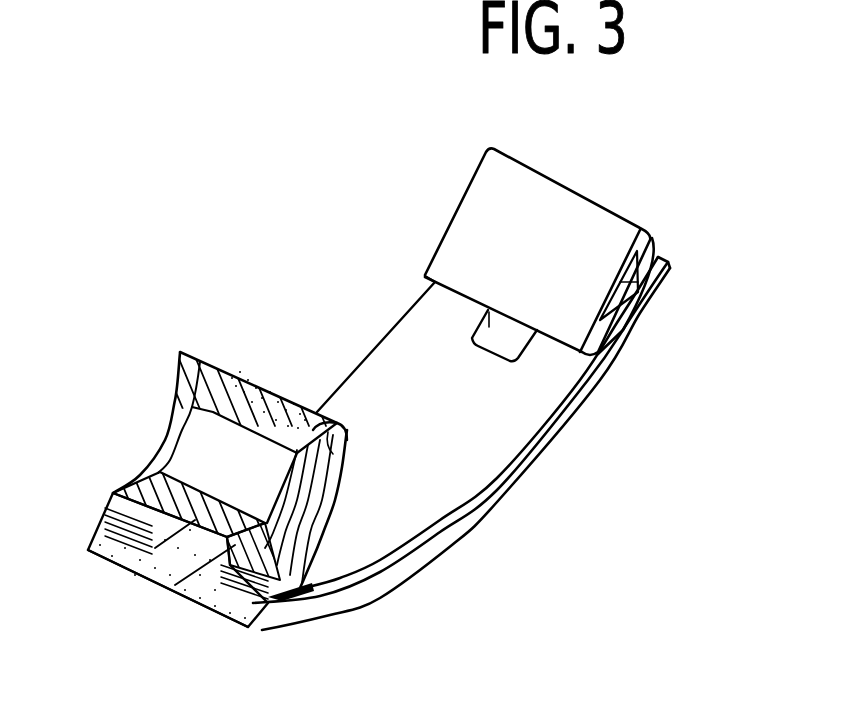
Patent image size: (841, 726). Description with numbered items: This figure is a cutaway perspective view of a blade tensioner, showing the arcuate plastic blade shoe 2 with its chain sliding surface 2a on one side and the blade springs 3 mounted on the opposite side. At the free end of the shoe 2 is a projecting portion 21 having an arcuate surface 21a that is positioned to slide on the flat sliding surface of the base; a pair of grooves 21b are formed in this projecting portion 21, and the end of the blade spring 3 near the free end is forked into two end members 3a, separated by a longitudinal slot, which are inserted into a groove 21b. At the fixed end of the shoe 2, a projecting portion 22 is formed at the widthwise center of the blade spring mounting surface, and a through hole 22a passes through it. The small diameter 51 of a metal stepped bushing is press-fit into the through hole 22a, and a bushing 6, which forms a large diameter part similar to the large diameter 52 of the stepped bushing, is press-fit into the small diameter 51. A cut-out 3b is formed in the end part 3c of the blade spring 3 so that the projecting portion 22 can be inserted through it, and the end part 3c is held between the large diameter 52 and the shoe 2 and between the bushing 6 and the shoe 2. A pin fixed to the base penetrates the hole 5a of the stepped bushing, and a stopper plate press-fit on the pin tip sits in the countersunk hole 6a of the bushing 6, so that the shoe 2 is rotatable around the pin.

The blade shoe 2 is at (501, 435).
The chain sliding surface 2a is at (452, 545).
The blade spring 3 is at (253, 479).
The end members 3a is at (665, 263).
The cut-out 3b is at (185, 592).
The end part 3c is at (242, 620).
The hole 5a is at (192, 418).
The bushing 6 is at (343, 415).
The countersunk hole 6a is at (343, 458).
The projecting portion 21 is at (564, 243).
The arcuate surface 21a is at (470, 200).
The grooves 21b is at (618, 352).
The projecting portion 22 is at (272, 357).
The through hole 22a is at (263, 380).
The small diameter 51 is at (155, 577).
The large diameter 52 is at (187, 347).